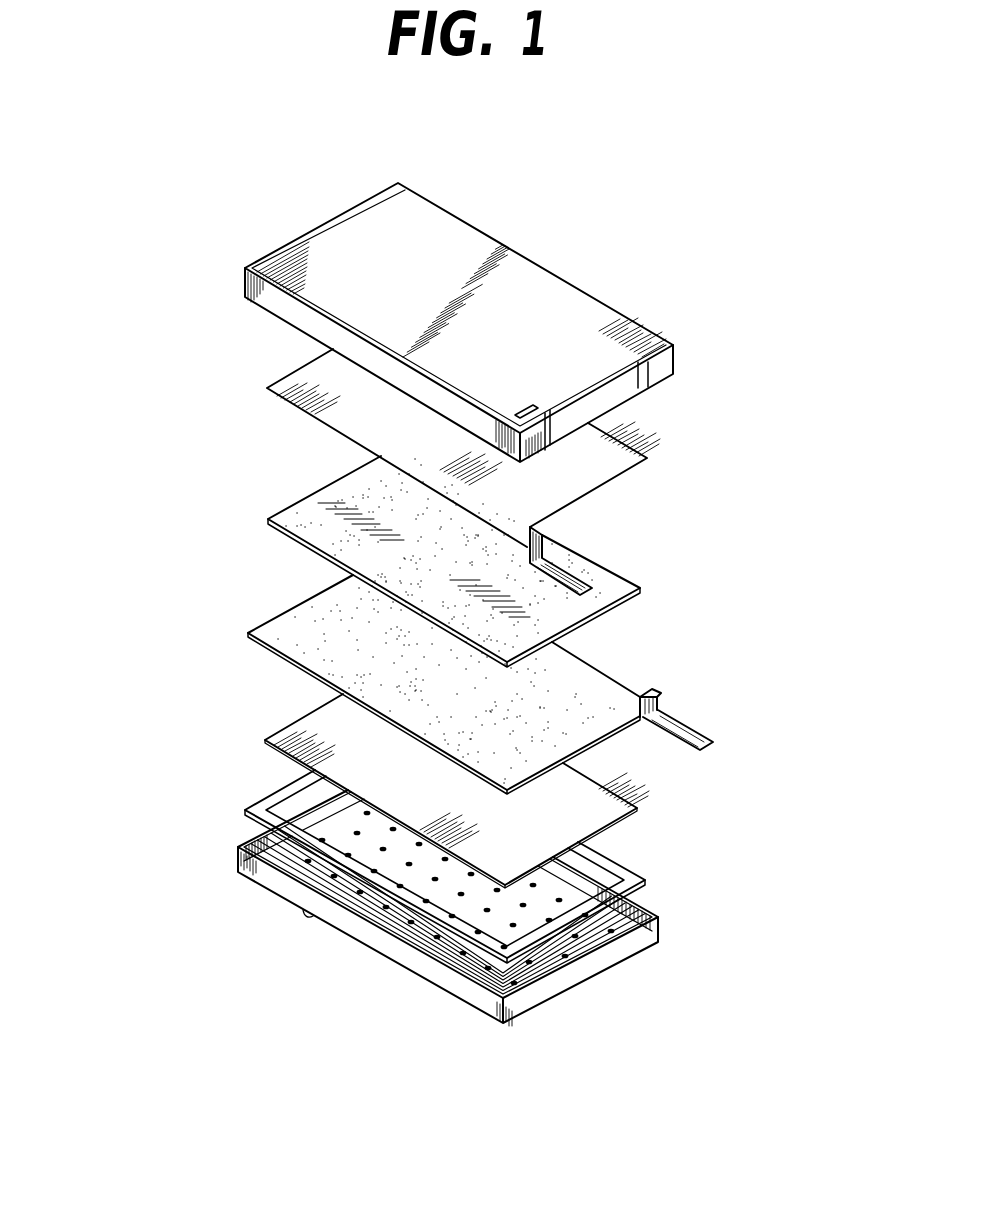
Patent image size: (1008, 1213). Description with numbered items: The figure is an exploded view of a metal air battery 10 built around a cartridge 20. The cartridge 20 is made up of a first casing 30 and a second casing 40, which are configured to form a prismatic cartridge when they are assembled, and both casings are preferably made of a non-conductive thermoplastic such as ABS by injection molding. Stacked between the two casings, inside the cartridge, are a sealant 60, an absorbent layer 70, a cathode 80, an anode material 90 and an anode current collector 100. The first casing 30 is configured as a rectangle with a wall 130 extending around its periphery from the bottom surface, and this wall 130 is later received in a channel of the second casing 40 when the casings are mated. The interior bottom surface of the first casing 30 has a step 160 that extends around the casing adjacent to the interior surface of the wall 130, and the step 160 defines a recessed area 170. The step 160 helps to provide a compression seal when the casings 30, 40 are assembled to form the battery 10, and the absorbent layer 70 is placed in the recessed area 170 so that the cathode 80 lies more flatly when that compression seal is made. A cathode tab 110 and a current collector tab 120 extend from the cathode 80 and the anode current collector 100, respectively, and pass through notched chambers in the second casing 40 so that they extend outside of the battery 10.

The metal air battery 10 is at (603, 212).
The cartridge 20 is at (231, 282).
The first casing 30 is at (587, 940).
The second casing 40 is at (623, 331).
The sealant 60 is at (647, 882).
The absorbent layer 70 is at (590, 807).
The cathode 80 is at (550, 743).
The anode material 90 is at (550, 620).
The anode current collector 100 is at (618, 456).
The cathode tab 110 is at (700, 737).
The current collector tab 120 is at (570, 583).
The wall 130 is at (423, 968).
The step 160 is at (627, 922).
The recessed area 170 is at (562, 972).